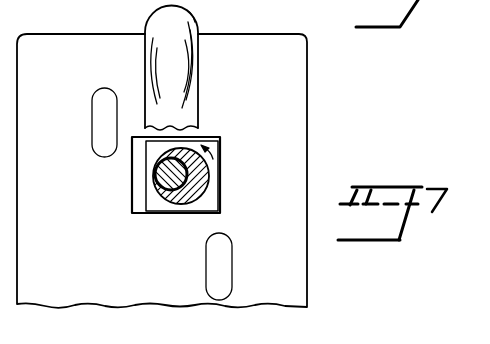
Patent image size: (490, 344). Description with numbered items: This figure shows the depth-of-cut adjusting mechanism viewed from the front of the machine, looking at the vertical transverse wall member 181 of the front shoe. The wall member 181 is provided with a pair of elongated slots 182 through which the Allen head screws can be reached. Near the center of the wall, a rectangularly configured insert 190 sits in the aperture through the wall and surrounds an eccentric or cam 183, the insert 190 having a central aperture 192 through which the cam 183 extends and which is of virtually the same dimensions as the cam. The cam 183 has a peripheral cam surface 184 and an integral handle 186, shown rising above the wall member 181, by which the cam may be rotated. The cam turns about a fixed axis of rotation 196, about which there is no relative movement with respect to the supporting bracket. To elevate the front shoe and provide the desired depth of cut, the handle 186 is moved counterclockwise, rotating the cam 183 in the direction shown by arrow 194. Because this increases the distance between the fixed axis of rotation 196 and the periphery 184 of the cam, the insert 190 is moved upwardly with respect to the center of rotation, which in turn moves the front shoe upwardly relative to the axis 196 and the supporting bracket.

The vertical transverse wall member 181 is at (262, 96).
The slots 182 is at (95, 105).
The eccentric or cam 183 is at (153, 188).
The peripheral cam surface 184 is at (210, 178).
The handle 186 is at (192, 8).
The insert 190 is at (158, 207).
The central aperture 192 is at (200, 193).
The arrow 194 is at (222, 150).
The fixed axis of rotation 196 is at (158, 173).